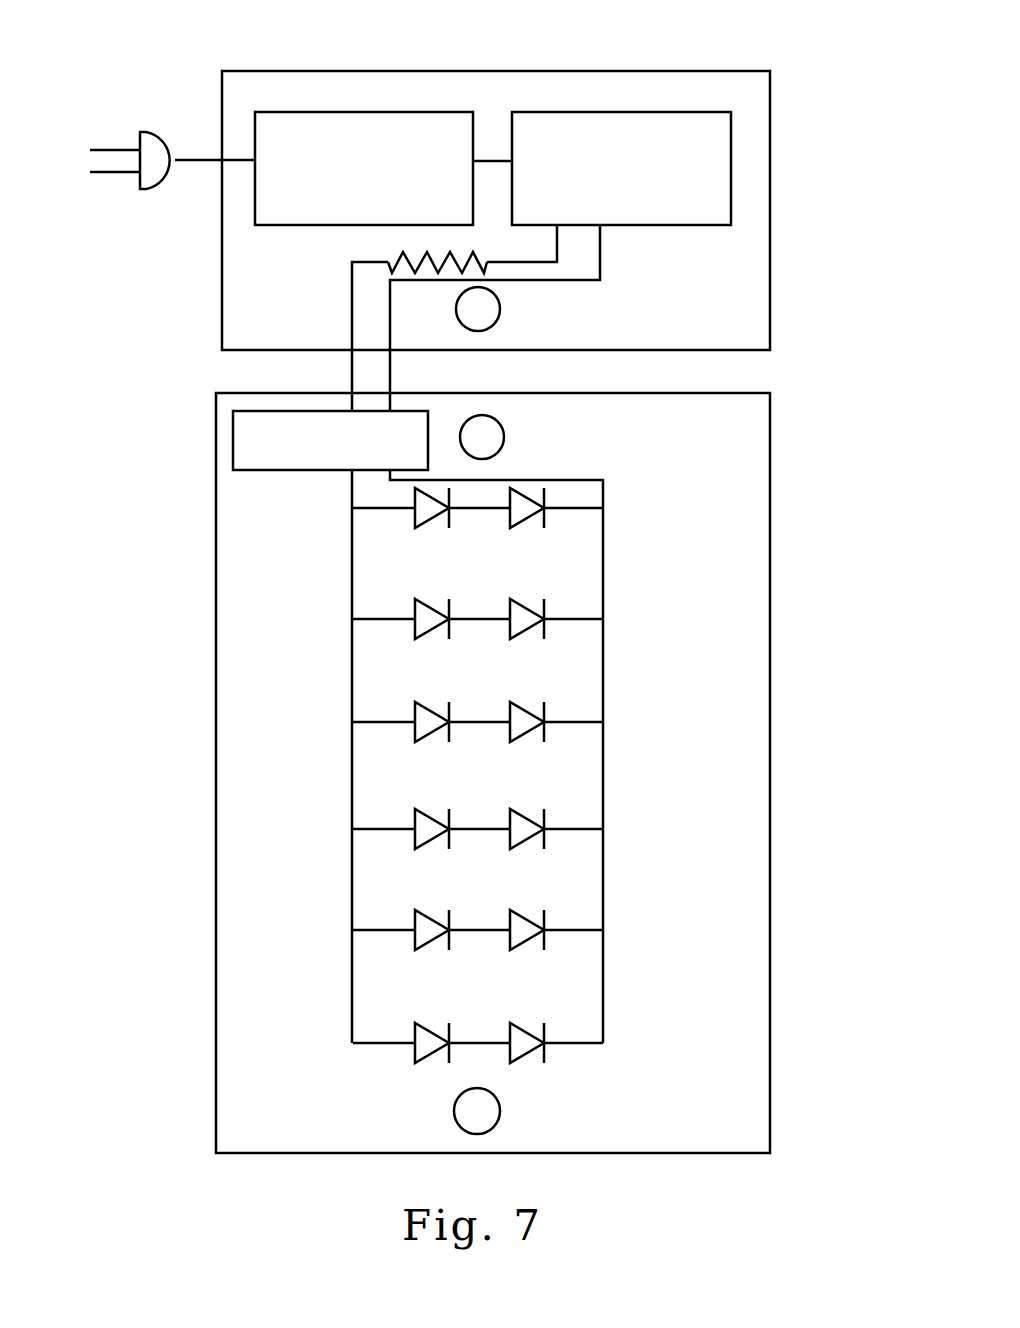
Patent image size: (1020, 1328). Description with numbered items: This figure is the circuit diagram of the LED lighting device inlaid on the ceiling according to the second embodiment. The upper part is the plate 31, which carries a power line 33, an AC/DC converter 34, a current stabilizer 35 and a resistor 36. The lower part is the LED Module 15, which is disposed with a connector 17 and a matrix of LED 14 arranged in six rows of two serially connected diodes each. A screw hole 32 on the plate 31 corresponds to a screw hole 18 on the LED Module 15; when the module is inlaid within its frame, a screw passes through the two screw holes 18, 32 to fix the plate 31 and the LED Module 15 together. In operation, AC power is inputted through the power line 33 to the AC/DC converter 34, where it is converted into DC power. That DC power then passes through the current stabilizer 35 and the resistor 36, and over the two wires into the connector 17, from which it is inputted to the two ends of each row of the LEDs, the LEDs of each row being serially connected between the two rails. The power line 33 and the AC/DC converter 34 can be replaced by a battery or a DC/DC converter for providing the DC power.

The LED 14 is at (518, 830).
The LED Module 15 is at (770, 868).
The connector 17 is at (331, 440).
The screw hole 18 is at (482, 437).
The plate 31 is at (500, 97).
The screw hole 32 is at (473, 307).
The power line 33 is at (118, 173).
The AC/DC converter 34 is at (364, 168).
The current stabilizer 35 is at (621, 168).
The resistor 36 is at (437, 249).